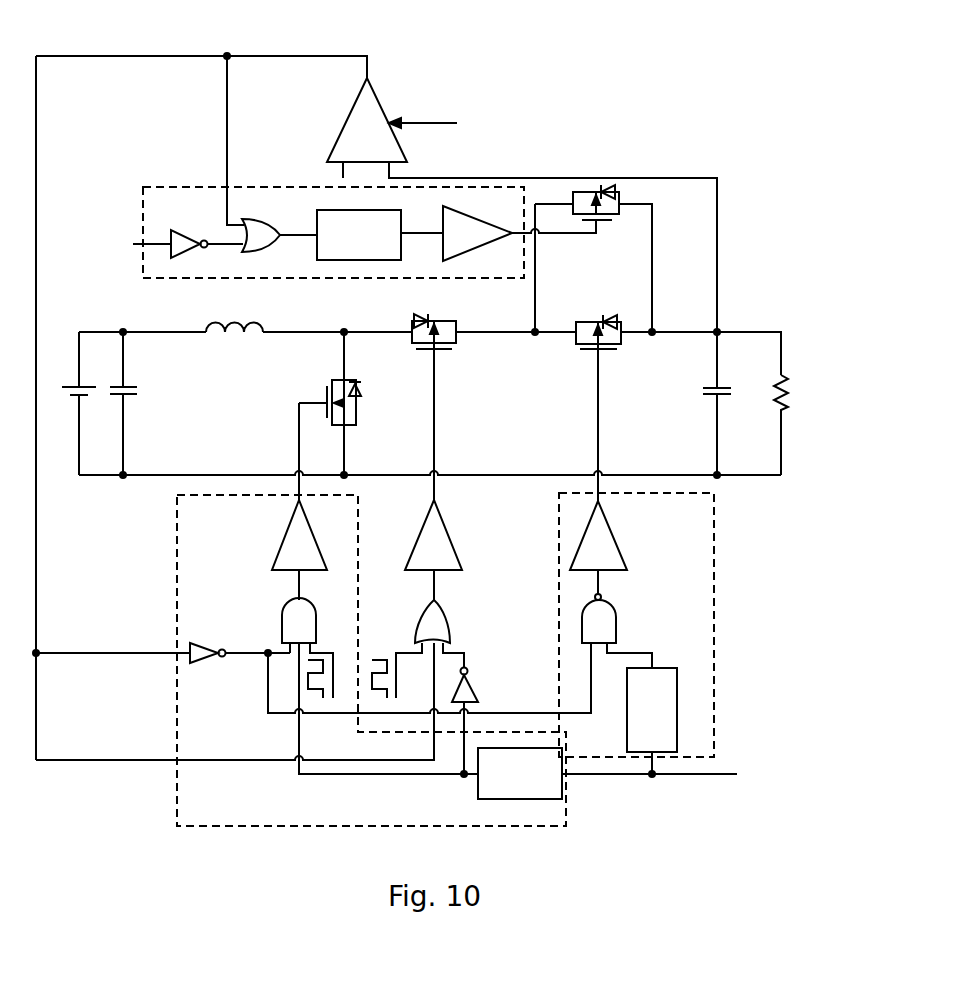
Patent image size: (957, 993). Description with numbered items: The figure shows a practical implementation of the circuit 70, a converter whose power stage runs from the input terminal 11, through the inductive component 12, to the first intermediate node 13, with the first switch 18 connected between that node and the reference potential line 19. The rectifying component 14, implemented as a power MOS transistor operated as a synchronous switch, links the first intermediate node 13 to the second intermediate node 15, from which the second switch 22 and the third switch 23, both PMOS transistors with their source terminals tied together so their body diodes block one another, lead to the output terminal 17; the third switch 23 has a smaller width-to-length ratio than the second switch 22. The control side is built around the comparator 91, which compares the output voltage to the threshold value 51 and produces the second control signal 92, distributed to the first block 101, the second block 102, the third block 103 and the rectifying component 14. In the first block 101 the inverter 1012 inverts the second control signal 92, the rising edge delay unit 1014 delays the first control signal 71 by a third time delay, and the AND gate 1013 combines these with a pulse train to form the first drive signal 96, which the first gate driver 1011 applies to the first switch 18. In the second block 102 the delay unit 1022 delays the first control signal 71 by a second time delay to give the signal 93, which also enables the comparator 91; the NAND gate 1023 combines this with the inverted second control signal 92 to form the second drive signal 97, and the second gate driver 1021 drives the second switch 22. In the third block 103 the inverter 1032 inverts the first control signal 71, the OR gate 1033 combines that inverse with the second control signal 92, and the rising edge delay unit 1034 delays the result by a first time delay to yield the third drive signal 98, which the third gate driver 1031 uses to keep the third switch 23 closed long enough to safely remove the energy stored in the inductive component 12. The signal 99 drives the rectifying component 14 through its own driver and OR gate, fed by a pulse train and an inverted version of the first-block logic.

The input terminal 11 is at (122, 328).
The inductive component 12 is at (246, 322).
The first intermediate node 13 is at (346, 328).
The rectifying component 14 is at (455, 320).
The second intermediate node 15 is at (533, 330).
The output terminal 17 is at (717, 328).
The first switch 18 is at (333, 381).
The reference potential line 19 is at (258, 473).
The second switch 22 is at (597, 318).
The third switch 23 is at (589, 221).
The threshold value 51 is at (343, 177).
The circuit 70 is at (752, 212).
The first control signal 71 is at (152, 243).
The comparator 91 is at (380, 100).
The second control signal 92 is at (371, 64).
The delayed signal 93 is at (437, 123).
The first drive signal 96 is at (298, 586).
The second drive signal 97 is at (600, 586).
The third drive signal 98 is at (413, 236).
The driver input signal 99 is at (436, 586).
The first block 101 is at (186, 541).
The second block 102 is at (708, 541).
The third block 103 is at (150, 192).
The first gate driver 1011 is at (282, 556).
The inverter 1012 is at (198, 661).
The AND gate 1013 is at (285, 632).
The rising edge delay unit 1014 is at (558, 800).
The second gate driver 1021 is at (618, 561).
The delay unit 1022 is at (627, 749).
The NAND gate 1023 is at (608, 635).
The third gate driver 1031 is at (458, 222).
The inverter 1032 is at (181, 253).
The OR gate 1033 is at (245, 222).
The rising edge delay unit 1034 is at (397, 222).